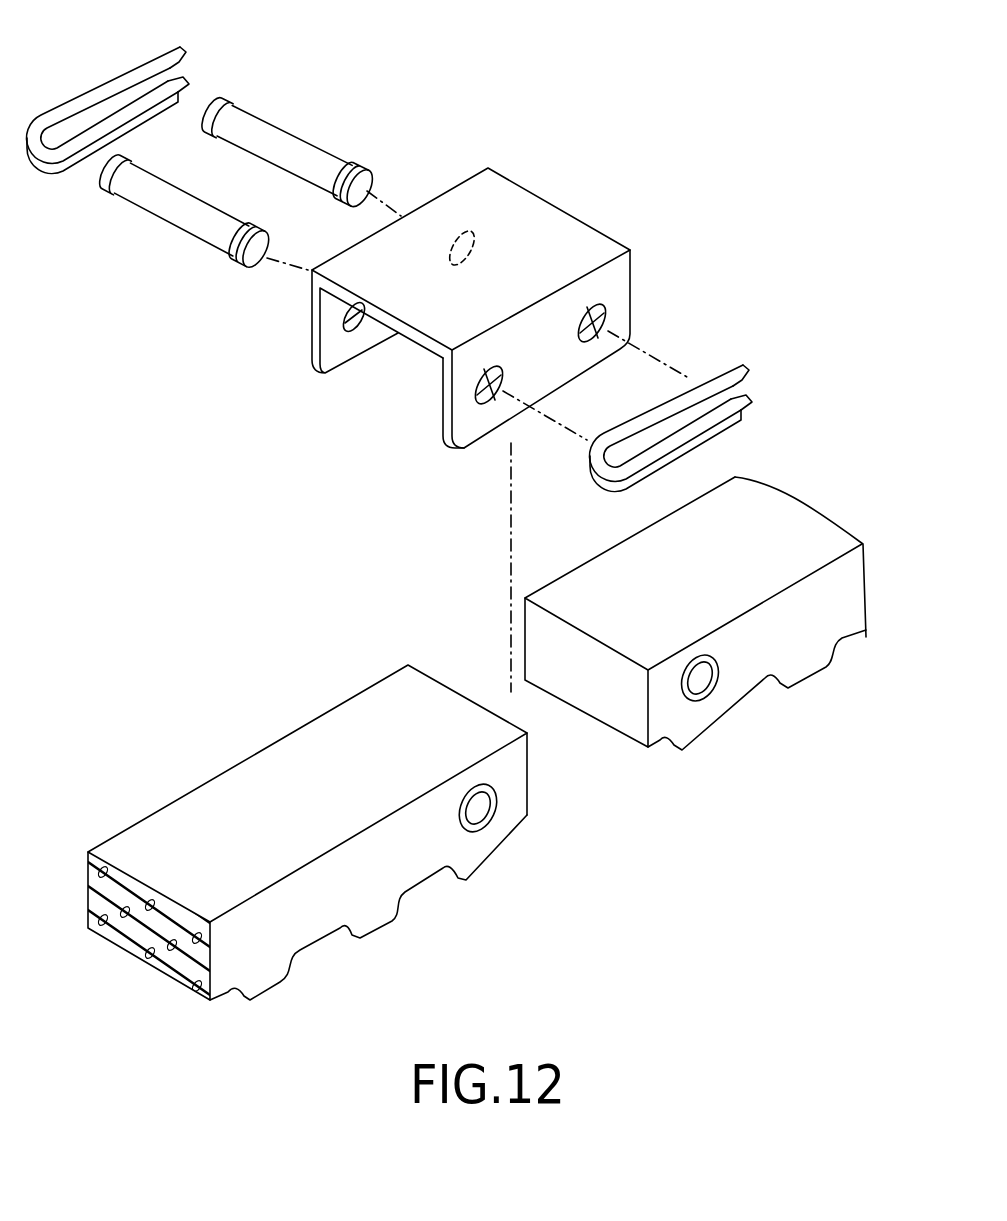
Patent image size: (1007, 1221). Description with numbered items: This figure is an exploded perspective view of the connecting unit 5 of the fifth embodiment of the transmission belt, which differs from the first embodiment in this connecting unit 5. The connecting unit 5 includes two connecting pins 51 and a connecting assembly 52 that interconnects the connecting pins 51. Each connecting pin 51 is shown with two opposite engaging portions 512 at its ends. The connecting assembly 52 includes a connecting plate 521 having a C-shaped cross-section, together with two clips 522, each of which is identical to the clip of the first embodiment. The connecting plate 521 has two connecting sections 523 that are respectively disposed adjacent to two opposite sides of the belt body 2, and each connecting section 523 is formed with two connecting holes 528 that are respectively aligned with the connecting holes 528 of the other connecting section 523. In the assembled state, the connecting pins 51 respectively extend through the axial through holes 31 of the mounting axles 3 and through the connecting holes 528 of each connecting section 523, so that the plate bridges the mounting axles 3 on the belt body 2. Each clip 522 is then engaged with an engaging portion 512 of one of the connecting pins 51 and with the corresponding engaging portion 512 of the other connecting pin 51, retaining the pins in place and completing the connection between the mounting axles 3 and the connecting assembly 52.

The belt body 2 is at (303, 917).
The mounting axle 3 is at (698, 675).
The axial through hole 31 is at (701, 678).
The connecting unit 5 is at (312, 437).
The connecting pin 51 is at (288, 134).
The engaging portion 512 is at (353, 176).
The connecting assembly 52 is at (506, 146).
The connecting plate 521 is at (582, 215).
The clip 522 is at (166, 48).
The connecting section 523 is at (618, 277).
The connecting hole 528 is at (607, 320).